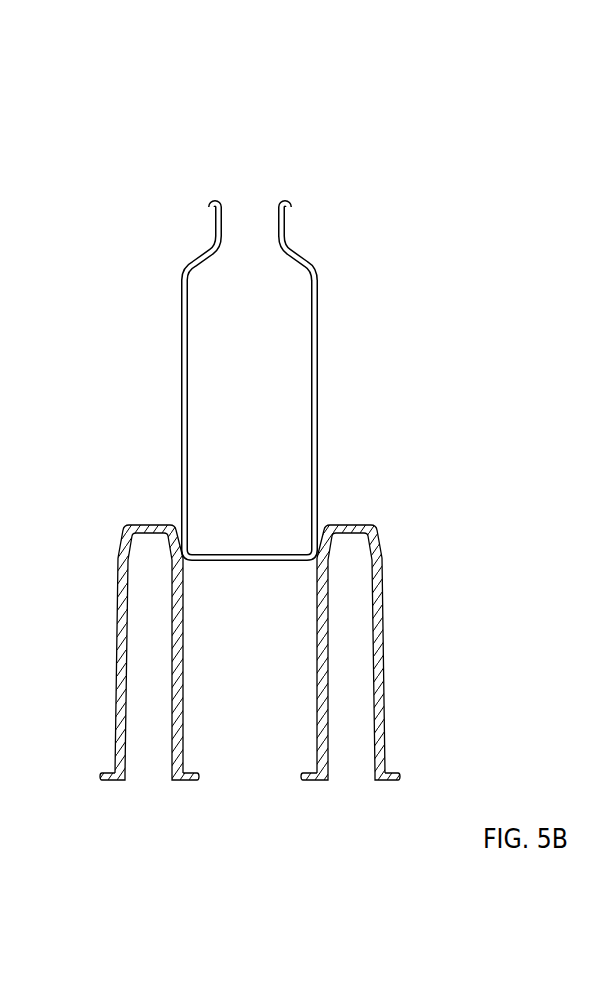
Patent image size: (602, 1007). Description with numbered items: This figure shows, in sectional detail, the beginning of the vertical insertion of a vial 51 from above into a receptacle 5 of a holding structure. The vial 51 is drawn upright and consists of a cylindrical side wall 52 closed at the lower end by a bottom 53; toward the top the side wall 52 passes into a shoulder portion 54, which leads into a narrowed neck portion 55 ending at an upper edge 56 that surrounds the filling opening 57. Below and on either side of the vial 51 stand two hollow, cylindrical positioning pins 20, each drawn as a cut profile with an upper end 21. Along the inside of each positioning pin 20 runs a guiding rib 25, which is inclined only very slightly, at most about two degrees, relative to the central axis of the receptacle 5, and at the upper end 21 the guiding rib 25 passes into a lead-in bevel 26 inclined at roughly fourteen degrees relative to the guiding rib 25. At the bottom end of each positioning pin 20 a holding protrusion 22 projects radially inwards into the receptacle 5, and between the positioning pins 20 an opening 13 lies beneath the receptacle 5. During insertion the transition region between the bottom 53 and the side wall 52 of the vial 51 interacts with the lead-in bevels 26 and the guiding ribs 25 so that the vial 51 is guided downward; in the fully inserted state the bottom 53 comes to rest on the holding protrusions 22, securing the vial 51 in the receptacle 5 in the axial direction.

The receptacle 5 is at (277, 702).
The opening 13 is at (253, 743).
The positioning pin 20 is at (122, 655).
The upper end of positioning pin 21 is at (150, 526).
The holding protrusion 22 is at (107, 774).
The guiding rib 25 is at (125, 607).
The lead-in bevel of guiding rib 26 is at (122, 550).
The vial 51 is at (353, 326).
The side wall 52 is at (313, 367).
The bottom 53 is at (255, 562).
The shoulder portion 54 is at (311, 250).
The narrowed neck portion 55 is at (282, 229).
The upper edge 56 is at (286, 209).
The filling opening 57 is at (257, 213).